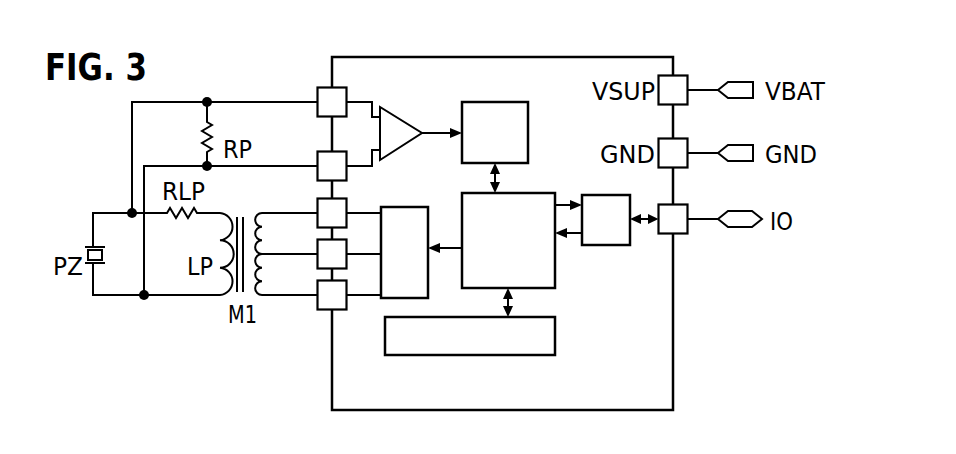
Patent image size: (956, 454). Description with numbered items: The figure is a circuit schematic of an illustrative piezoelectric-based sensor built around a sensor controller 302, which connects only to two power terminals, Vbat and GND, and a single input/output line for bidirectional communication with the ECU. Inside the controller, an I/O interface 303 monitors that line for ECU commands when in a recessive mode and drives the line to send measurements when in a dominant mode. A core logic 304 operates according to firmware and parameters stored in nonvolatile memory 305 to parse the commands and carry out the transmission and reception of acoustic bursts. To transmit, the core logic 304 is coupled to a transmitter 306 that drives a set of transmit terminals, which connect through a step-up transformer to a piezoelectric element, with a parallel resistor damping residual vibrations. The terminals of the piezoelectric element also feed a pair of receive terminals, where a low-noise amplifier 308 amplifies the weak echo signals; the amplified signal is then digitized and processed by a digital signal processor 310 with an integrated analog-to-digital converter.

The sensor controller 302 is at (624, 57).
The I/O interface 303 is at (612, 243).
The core logic 304 is at (557, 255).
The nonvolatile memory 305 is at (512, 357).
The transmitter 306 is at (399, 208).
The low-noise amplifier 308 is at (401, 119).
The digital signal processor 310 is at (529, 116).